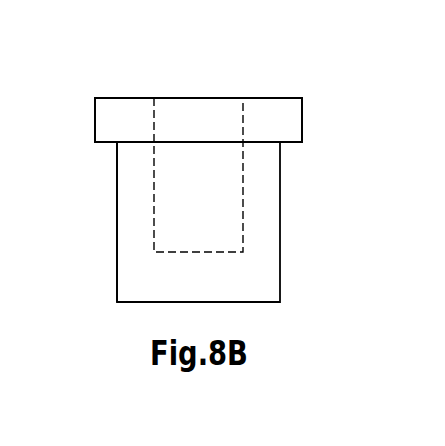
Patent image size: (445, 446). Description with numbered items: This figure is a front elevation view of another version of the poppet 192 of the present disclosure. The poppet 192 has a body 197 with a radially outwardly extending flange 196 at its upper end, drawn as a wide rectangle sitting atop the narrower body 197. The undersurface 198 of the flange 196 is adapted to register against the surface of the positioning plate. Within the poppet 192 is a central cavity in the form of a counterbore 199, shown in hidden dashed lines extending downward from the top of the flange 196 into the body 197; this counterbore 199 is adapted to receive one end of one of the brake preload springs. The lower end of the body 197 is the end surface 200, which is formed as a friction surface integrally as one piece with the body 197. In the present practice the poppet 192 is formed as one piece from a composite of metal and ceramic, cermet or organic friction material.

The poppet 192 is at (296, 202).
The flange 196 is at (95, 122).
The body 197 is at (117, 230).
The undersurface of flange 198 is at (108, 145).
The counterbore 199 is at (243, 181).
The end surface 200 is at (167, 303).